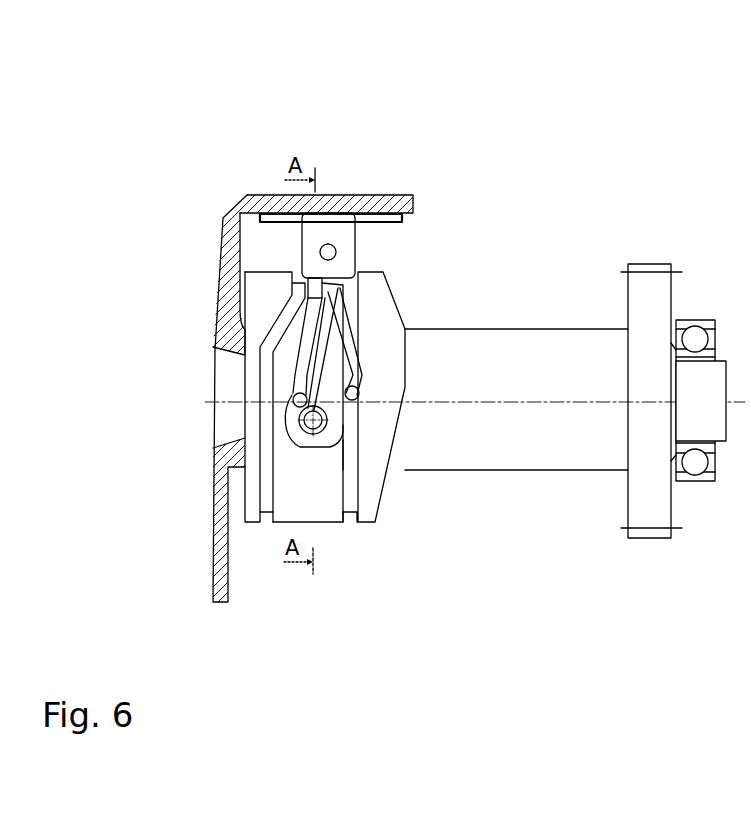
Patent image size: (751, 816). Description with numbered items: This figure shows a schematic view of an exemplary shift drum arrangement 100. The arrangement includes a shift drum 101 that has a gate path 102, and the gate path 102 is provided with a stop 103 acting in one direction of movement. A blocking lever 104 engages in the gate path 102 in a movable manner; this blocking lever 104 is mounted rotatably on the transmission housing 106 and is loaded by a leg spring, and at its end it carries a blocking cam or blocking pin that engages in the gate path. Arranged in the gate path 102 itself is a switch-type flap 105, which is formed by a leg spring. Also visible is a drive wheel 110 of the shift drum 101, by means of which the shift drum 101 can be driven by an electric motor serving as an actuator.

The shift drum arrangement 100 is at (604, 184).
The shift drum 101 is at (372, 303).
The gate path 102 is at (337, 415).
The stop 103 is at (322, 450).
The blocking lever 104 is at (320, 303).
The switch-type flap 105 is at (330, 382).
The transmission housing 106 is at (220, 268).
The drive wheel 110 is at (645, 477).